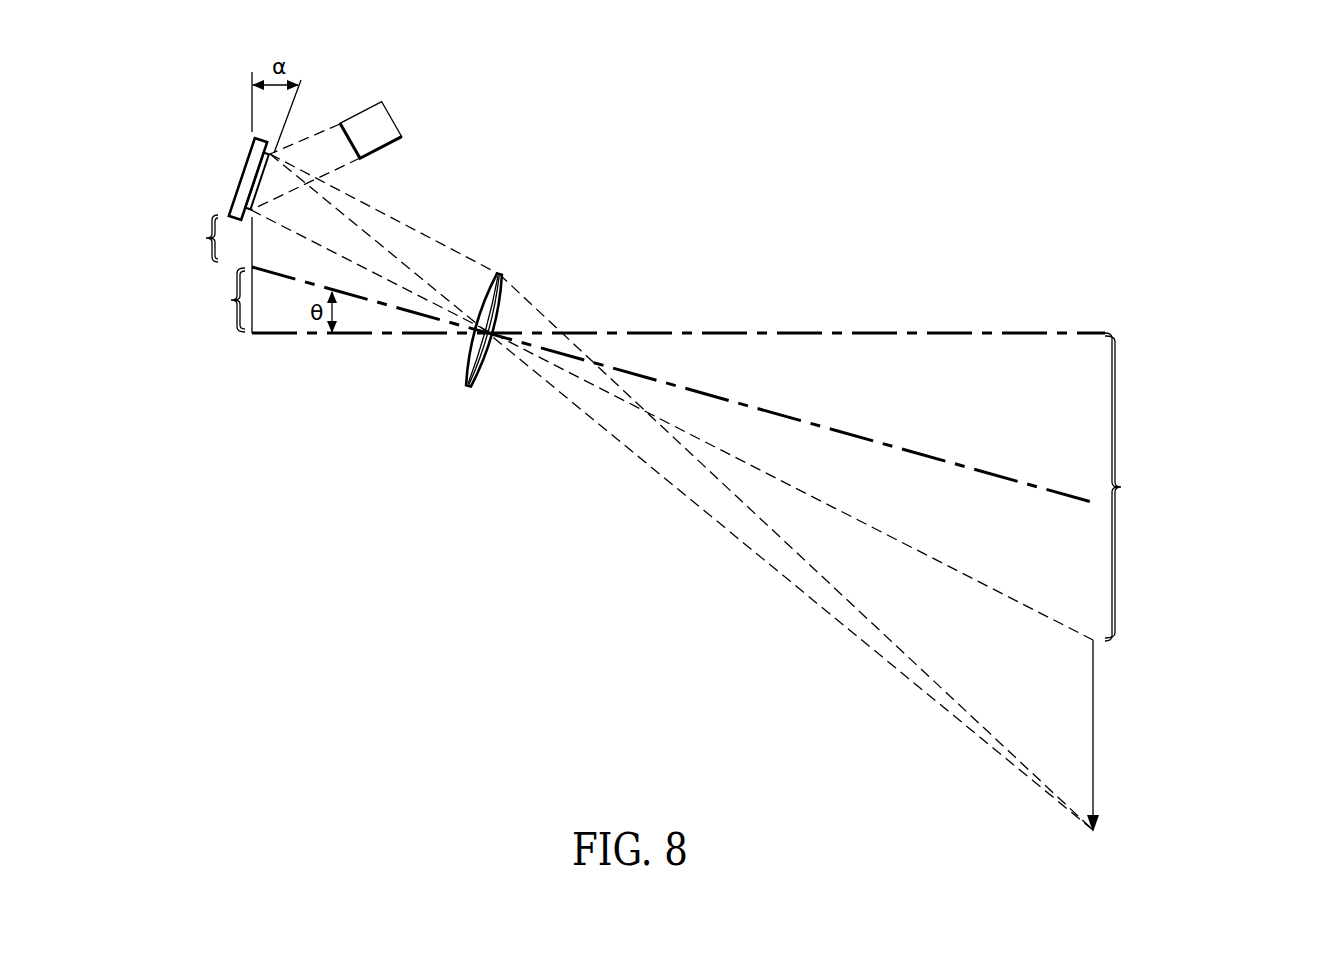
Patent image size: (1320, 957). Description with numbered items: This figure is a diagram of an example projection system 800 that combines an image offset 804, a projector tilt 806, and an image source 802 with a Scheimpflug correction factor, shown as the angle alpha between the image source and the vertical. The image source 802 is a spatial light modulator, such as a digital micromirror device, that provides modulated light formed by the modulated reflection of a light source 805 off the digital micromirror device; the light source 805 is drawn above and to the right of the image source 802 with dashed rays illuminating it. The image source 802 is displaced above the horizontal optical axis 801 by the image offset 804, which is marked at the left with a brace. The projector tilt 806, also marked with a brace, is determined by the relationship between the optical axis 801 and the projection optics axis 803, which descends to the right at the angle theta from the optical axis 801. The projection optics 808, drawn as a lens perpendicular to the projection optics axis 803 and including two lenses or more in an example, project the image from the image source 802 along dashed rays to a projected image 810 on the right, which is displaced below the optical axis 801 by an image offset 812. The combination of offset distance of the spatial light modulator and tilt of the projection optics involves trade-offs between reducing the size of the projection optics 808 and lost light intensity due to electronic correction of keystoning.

The projection system 800 is at (1072, 161).
The optical axis 801 is at (703, 330).
The image source 802 is at (243, 176).
The projection optics axis 803 is at (787, 415).
The image offset 804 is at (165, 230).
The light source 805 is at (390, 112).
The projector tilt 806 is at (143, 305).
The projection optics 808 is at (498, 274).
The projected image 810 is at (1097, 725).
The image offset 812 is at (1199, 487).